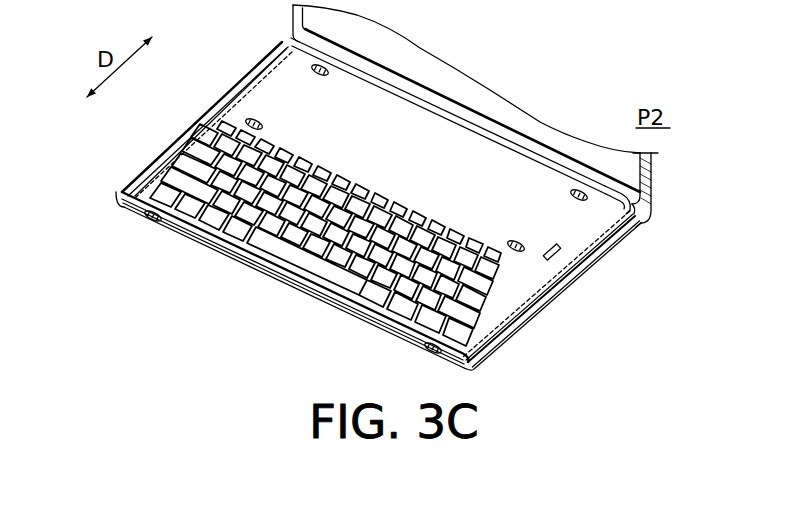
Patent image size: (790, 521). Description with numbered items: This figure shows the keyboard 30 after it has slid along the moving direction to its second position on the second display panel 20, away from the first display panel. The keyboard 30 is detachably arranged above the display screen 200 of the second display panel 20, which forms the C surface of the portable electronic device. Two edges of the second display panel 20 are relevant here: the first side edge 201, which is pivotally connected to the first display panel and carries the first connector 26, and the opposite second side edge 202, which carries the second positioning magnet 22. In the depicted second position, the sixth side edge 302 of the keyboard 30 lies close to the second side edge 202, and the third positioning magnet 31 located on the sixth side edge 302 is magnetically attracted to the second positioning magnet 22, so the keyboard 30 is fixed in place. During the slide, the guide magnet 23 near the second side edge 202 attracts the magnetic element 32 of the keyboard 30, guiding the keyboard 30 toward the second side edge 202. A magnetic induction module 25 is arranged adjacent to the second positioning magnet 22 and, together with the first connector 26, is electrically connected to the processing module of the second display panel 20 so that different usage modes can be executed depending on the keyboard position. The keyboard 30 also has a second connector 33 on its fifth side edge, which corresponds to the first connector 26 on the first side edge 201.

The second display panel 20 is at (280, 42).
The second positioning magnet 22 is at (153, 220).
The guide magnet 23 is at (223, 100).
The magnetic induction module 25 is at (177, 228).
The first connector 26 is at (607, 201).
The keyboard 30 is at (212, 106).
The third positioning magnet 31 is at (255, 117).
The magnetic element 32 is at (193, 127).
The second connector 33 is at (548, 250).
The display screen 200 is at (577, 240).
The first side edge 201 is at (643, 223).
The second side edge 202 is at (313, 300).
The sixth side edge 302 is at (273, 271).